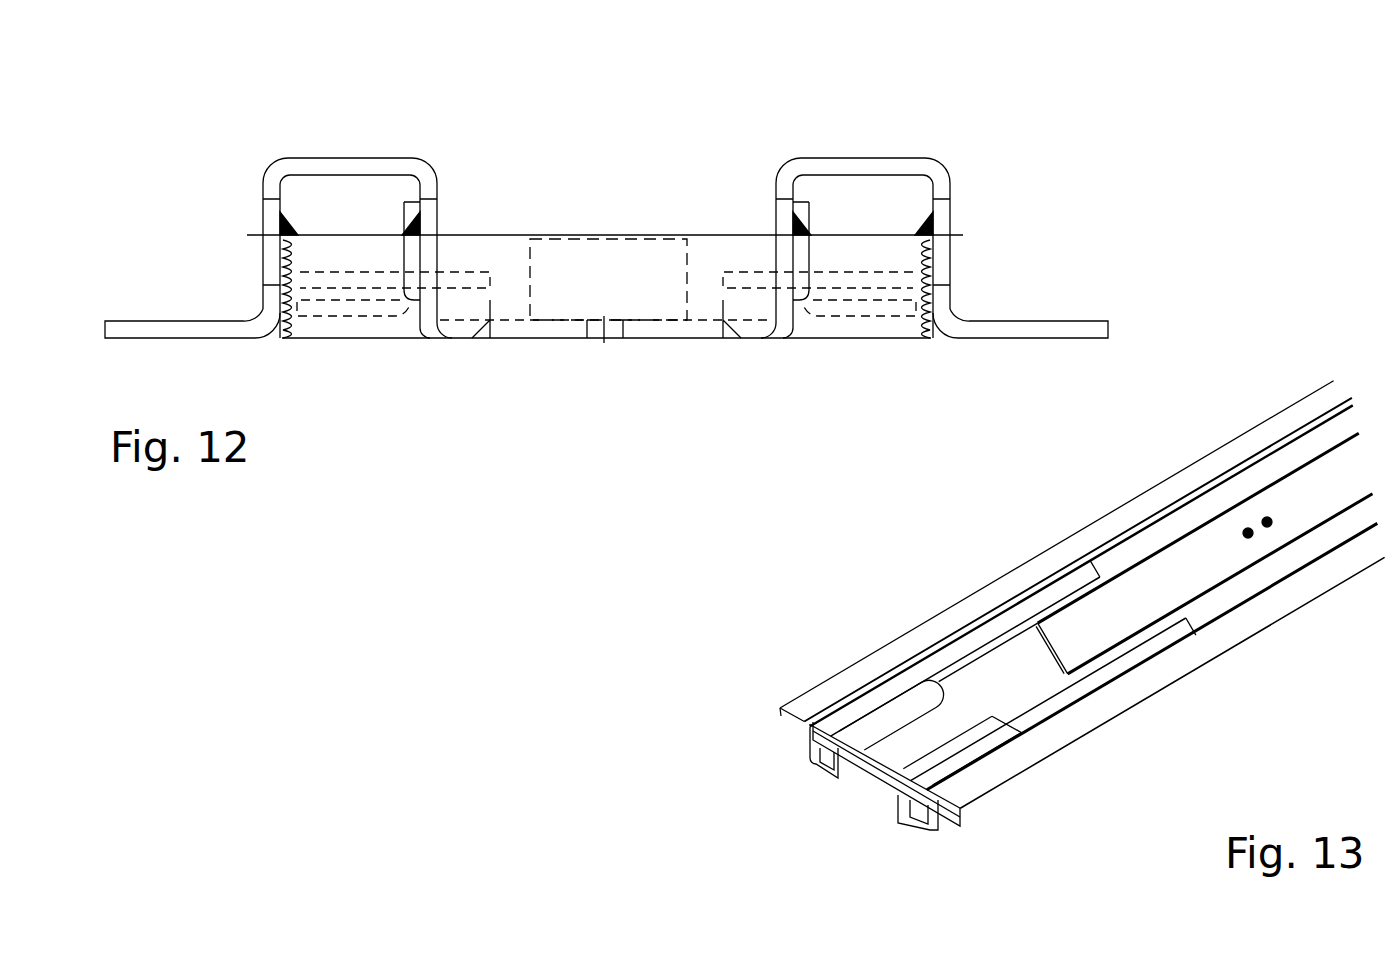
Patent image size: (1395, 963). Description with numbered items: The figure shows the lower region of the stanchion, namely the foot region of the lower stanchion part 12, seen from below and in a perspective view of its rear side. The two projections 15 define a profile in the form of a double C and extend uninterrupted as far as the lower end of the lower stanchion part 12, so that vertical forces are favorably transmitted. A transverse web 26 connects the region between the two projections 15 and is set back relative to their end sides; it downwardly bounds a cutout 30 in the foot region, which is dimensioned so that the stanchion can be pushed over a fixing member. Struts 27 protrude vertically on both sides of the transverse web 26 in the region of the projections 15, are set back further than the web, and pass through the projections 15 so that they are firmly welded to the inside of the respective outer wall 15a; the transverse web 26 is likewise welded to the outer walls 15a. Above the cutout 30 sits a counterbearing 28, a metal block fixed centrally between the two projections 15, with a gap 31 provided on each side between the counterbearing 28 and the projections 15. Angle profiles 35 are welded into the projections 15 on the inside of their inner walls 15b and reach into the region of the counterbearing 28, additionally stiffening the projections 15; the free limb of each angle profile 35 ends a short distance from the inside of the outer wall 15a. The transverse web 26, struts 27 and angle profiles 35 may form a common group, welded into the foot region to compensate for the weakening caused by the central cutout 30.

In FIG. 12, the lower stanchion part 12 is at (1022, 208).
In FIG. 13, the lower stanchion part 12 is at (1270, 610).
In FIG. 12, the projections 15 is at (277, 178).
In FIG. 13, the projections 15 is at (818, 770).
In FIG. 12, the outer wall 15a is at (280, 268).
In FIG. 12, the inner walls 15b is at (430, 213).
In FIG. 12, the transverse web 26 is at (695, 250).
In FIG. 13, the transverse web 26 is at (867, 768).
In FIG. 12, the struts 27 is at (468, 307).
In FIG. 13, the struts 27 is at (875, 728).
In FIG. 12, the counterbearing 28 is at (632, 262).
In FIG. 13, the counterbearing 28 is at (1037, 630).
In FIG. 13, the cutout 30 is at (993, 703).
In FIG. 12, the gap 31 is at (508, 250).
In FIG. 12, the angle profiles 35 is at (343, 307).
In FIG. 13, the angle profiles 35 is at (1050, 600).